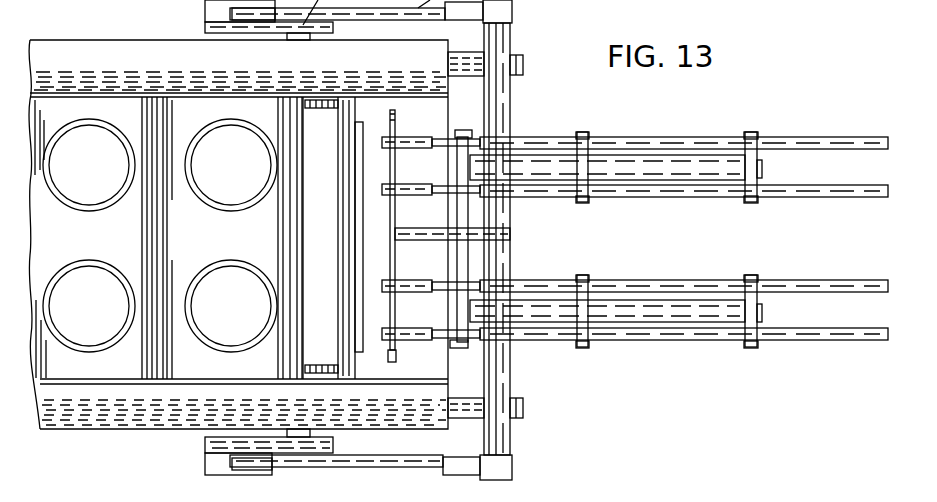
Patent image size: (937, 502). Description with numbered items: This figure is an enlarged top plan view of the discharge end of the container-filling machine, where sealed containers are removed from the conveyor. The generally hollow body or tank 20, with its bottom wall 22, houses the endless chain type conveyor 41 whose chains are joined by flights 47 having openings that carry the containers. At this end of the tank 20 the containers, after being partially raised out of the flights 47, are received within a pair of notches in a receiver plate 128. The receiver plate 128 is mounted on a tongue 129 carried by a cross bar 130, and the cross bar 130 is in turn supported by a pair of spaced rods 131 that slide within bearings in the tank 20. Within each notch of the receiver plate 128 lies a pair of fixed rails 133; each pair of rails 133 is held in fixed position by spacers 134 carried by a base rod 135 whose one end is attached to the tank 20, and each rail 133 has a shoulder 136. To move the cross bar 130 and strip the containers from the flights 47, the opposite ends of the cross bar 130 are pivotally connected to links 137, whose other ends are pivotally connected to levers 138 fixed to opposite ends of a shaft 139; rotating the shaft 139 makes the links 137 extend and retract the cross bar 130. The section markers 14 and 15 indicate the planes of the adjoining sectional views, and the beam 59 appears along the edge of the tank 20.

The tank 20 is at (104, 434).
The bottom wall 22 is at (129, 7).
The endless chain type conveyor 41 is at (357, 109).
The flights 47 is at (140, 108).
The cross beam 59 is at (93, 50).
The receiver plate 128 is at (396, 115).
The tongue 129 is at (492, 235).
The cross bar 130 is at (495, 367).
The rods 131 is at (472, 62).
The fixed rails 133 is at (856, 188).
The spacers 134 is at (590, 274).
The base rod 135 is at (665, 170).
The shoulder 136 is at (438, 158).
The links 137 is at (382, 466).
The levers 138 is at (297, 446).
The shaft 139 is at (300, 36).
The section line 14- 14 is at (212, 237).
The section line 15- 15 is at (715, 117).